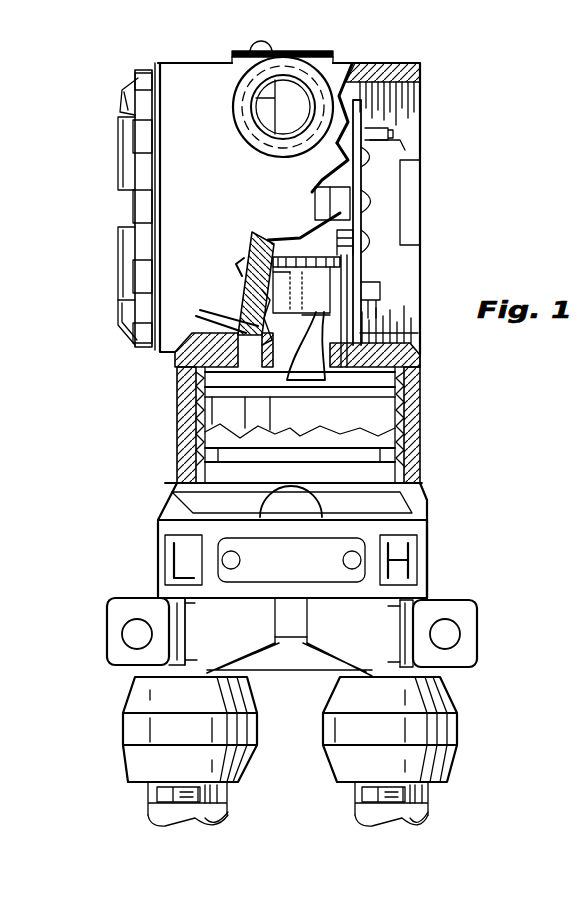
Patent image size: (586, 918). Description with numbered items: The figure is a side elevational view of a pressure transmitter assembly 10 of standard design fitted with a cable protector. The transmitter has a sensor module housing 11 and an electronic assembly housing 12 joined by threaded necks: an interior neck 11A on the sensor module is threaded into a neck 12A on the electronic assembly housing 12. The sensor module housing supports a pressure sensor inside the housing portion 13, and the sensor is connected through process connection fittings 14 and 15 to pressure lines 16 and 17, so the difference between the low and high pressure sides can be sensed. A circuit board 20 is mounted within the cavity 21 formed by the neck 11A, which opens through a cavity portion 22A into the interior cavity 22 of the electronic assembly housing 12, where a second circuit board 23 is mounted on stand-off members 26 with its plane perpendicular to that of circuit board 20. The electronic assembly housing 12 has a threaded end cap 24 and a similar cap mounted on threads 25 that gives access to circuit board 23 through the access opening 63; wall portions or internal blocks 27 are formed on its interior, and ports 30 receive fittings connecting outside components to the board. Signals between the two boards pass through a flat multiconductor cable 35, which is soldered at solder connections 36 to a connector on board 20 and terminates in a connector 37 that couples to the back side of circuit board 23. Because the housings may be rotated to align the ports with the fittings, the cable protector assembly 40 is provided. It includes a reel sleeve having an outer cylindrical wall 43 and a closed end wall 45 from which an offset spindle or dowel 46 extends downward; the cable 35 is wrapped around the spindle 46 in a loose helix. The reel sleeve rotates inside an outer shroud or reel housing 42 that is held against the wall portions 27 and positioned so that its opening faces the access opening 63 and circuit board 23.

The pressure transmitter assembly 10 is at (160, 487).
The sensor module housing 11 is at (426, 565).
The interior neck 11A is at (412, 393).
The electronic assembly housing 12 is at (204, 86).
The neck 12A is at (190, 392).
The housing portion 13 is at (370, 535).
The fitting 14 is at (124, 722).
The fitting 15 is at (456, 730).
The pressure line 16 is at (148, 802).
The pressure line 17 is at (425, 802).
The circuit board 20 is at (192, 419).
The cavity 21 is at (190, 446).
The interior cavity 22 is at (392, 138).
The cavity portion 22A is at (190, 374).
The second circuit board 23 is at (366, 192).
The threaded end cap 24 is at (142, 86).
The threads 25 is at (422, 97).
The stand-off members 26 is at (322, 186).
The wall portions or internal blocks 27 is at (228, 342).
The ports 30 is at (290, 92).
The multiconductor printed circuit board connector cable 35 is at (400, 334).
The solder connections 36 is at (328, 388).
The connector 37 is at (365, 286).
The cable protector assembly 40 is at (260, 328).
The outer shroud or reel housing 42 is at (252, 248).
The outer cylindrical wall 43 is at (245, 268).
The closed end wall 45 is at (308, 238).
The spindle or dowel 46 is at (248, 298).
The access opening 63 is at (410, 208).